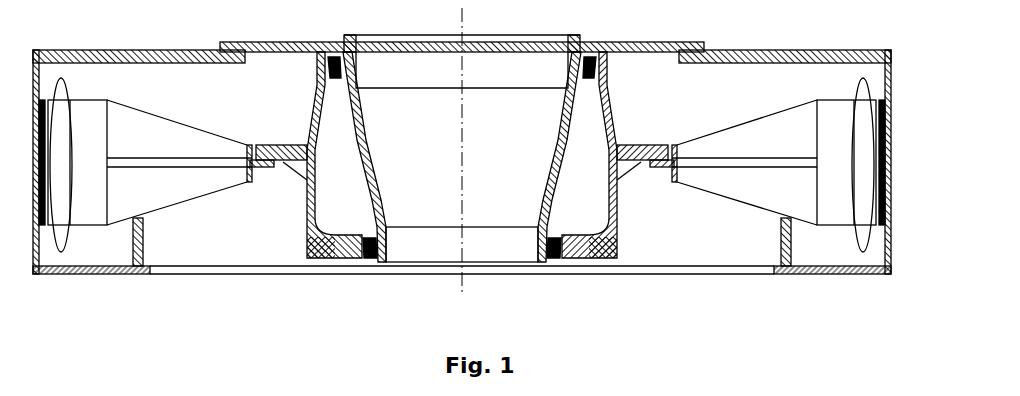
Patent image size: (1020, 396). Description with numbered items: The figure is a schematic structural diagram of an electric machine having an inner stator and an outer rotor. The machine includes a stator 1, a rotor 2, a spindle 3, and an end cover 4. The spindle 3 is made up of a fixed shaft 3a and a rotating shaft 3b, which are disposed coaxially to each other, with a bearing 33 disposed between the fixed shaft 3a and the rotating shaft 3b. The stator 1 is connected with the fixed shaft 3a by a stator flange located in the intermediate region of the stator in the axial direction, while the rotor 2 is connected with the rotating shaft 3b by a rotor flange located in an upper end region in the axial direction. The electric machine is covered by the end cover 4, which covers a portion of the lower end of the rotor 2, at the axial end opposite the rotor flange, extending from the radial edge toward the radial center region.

The stator 1 is at (781, 250).
The rotor 2 is at (891, 163).
The spindle 3 is at (388, 148).
The fixed shaft 3a is at (309, 127).
The rotating shaft 3b is at (302, 42).
The bearing 33 is at (363, 258).
The end cover 4 is at (72, 275).